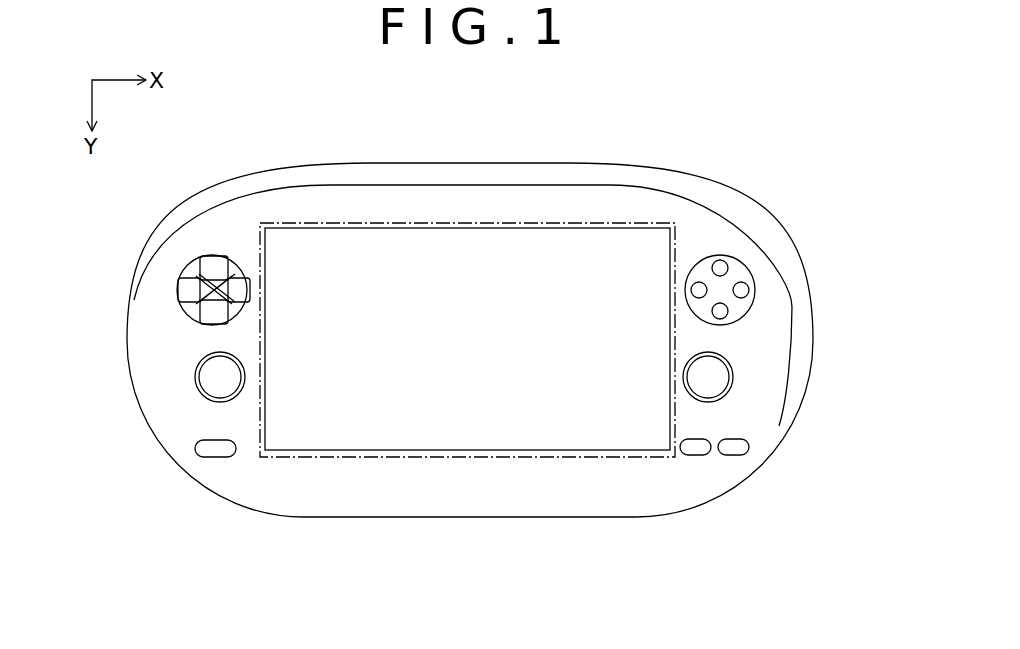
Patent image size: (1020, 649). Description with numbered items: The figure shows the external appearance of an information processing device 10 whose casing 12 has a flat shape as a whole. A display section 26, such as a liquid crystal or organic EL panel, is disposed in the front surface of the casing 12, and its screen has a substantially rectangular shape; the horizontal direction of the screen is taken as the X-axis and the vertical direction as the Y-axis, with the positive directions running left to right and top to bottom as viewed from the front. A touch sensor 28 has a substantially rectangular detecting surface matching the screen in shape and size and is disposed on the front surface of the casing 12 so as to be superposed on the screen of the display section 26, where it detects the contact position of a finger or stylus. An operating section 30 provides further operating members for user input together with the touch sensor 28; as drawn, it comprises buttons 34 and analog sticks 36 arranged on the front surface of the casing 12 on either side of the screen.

The information processing device 10 is at (475, 367).
The casing 12 is at (627, 503).
The display section 26 is at (545, 225).
The touch sensor 28 is at (300, 461).
The operating section 30 is at (475, 356).
The buttons 34 is at (218, 318).
The analog sticks 36 is at (195, 377).